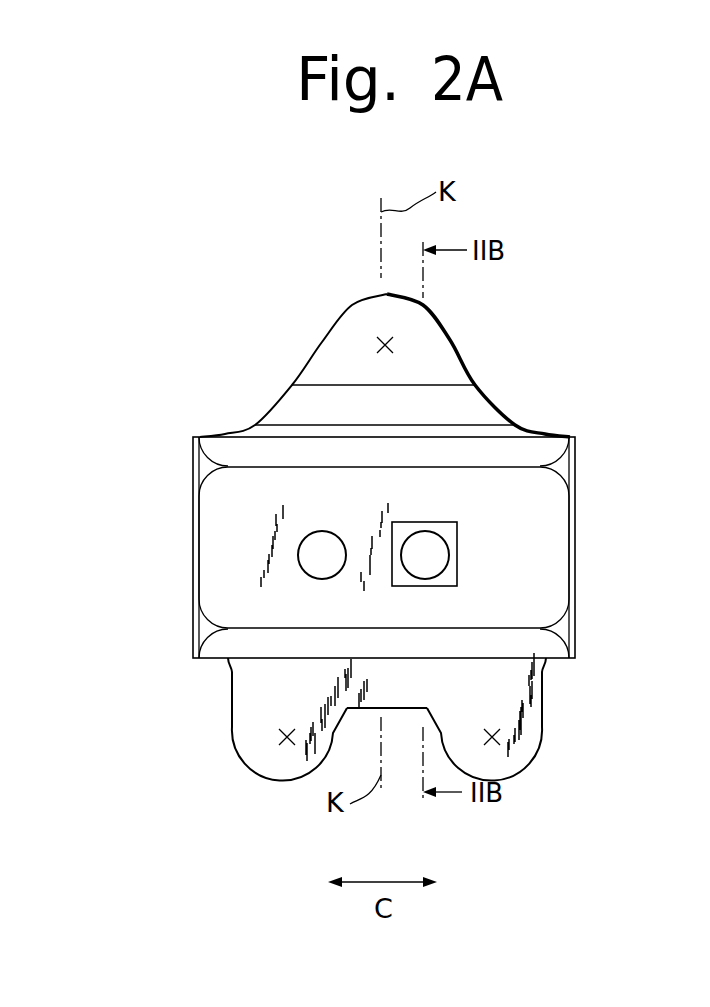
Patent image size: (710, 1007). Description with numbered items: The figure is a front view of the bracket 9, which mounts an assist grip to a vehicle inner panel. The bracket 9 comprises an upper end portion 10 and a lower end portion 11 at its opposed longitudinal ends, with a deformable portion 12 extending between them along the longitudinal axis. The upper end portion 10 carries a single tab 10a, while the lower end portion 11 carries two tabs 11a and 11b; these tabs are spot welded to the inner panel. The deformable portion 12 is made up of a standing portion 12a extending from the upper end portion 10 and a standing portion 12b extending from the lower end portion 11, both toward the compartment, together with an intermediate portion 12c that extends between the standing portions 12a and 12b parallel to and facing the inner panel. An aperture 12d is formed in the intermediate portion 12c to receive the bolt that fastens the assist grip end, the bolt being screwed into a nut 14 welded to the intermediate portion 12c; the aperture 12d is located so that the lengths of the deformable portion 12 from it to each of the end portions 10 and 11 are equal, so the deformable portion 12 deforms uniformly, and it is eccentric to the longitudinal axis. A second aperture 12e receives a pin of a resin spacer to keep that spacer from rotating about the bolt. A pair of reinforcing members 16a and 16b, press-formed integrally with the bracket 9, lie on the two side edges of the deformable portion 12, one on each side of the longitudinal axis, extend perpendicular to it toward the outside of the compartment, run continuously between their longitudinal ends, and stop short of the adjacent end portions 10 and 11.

The bracket 9 is at (484, 368).
The upper end portion 10 is at (306, 321).
The tab 10a is at (332, 350).
The lower end portion 11 is at (254, 780).
The tab 11a is at (252, 705).
The tab 11b is at (540, 733).
The deformable portion 12 is at (182, 518).
The standing portion 12a is at (492, 448).
The standing portion 12b is at (563, 658).
The intermediate portion 12c is at (530, 558).
The aperture 12d is at (438, 554).
The aperture 12e is at (306, 566).
The nut 14 is at (452, 575).
The reinforcing member 16a is at (193, 558).
The reinforcing member 16b is at (577, 623).